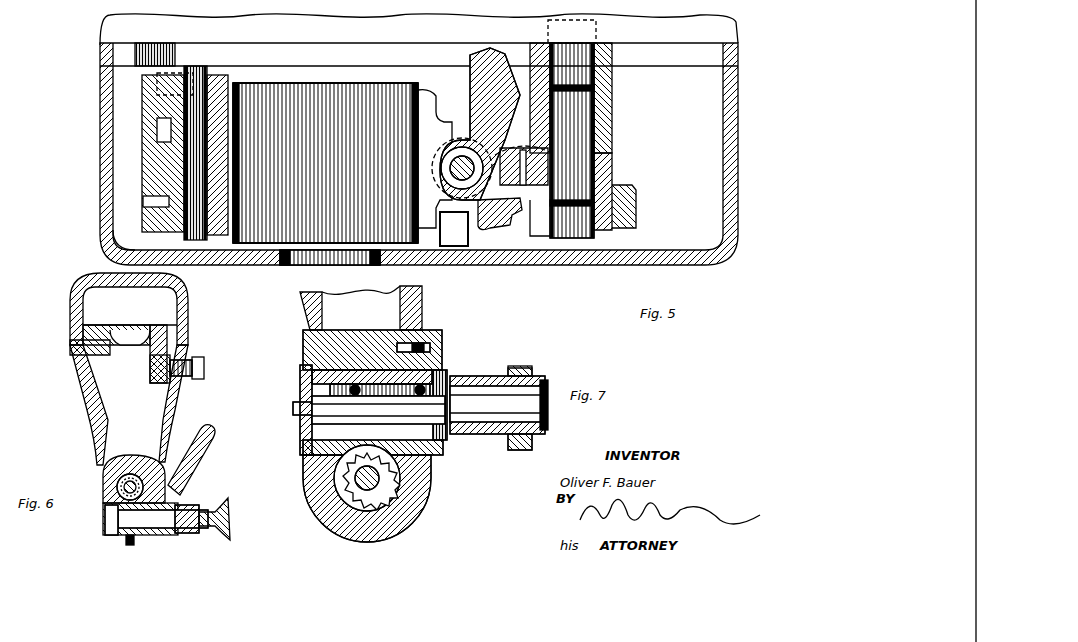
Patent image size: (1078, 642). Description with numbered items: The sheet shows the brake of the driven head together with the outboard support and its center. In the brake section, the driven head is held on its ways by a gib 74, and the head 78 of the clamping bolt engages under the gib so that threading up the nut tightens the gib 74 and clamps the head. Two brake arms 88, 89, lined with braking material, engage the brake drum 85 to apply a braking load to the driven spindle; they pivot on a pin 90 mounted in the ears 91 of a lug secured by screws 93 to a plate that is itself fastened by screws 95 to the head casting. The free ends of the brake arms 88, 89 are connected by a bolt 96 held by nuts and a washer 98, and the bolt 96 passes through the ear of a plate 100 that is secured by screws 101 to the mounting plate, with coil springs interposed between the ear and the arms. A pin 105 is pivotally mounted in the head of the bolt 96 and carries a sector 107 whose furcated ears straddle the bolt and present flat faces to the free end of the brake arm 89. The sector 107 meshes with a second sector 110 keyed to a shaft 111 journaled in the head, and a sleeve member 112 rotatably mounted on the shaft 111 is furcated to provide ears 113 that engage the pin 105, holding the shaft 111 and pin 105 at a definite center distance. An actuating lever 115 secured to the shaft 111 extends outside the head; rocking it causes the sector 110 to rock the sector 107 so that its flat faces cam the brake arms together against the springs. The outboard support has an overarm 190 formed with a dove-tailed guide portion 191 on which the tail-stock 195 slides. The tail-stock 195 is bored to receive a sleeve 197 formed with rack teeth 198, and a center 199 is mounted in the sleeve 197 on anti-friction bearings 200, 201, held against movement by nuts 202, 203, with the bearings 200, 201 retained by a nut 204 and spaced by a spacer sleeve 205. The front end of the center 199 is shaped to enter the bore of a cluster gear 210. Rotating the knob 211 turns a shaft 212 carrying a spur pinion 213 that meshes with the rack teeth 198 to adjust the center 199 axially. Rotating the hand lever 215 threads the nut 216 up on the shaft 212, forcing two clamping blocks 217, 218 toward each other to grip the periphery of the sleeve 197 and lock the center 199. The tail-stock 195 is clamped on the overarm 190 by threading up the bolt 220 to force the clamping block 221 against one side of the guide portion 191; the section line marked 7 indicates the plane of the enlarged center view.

In FIG. 5, the gib 74 is at (222, 18).
In FIG. 5, the head of the bolt 78 is at (742, 5).
In FIG. 5, the brake drum 85 is at (382, 95).
In FIG. 5, the brake arm 88 is at (165, 128).
In FIG. 5, the brake arm 89 is at (160, 190).
In FIG. 5, the pin 90 is at (195, 240).
In FIG. 5, the ears 91 is at (125, 238).
In FIG. 5, the screws 93 is at (165, 45).
In FIG. 5, the screws 95 is at (373, 55).
In FIG. 5, the bolt 96 is at (482, 150).
In FIG. 5, the washer 98 is at (435, 159).
In FIG. 5, the plate 100 is at (472, 100).
In FIG. 5, the screws 101 is at (545, 50).
In FIG. 5, the pin 105 is at (468, 240).
In FIG. 5, the sector 107 is at (500, 214).
In FIG. 5, the sector 110 is at (612, 190).
In FIG. 5, the shaft 111 is at (595, 37).
In FIG. 5, the sleeve member 112 is at (612, 135).
In FIG. 5, the ears 113 is at (528, 110).
In FIG. 5, the actuating lever 115 is at (548, 238).
In FIG. 6, the overarm 190 is at (190, 300).
In FIG. 6, the dove-tailed guide portion 191 is at (96, 352).
In FIG. 6, the tail-stock 195 is at (188, 415).
In FIG. 7, the tail-stock 195 is at (310, 323).
In FIG. 7, the sleeve 197 is at (303, 450).
In FIG. 7, the rack teeth 198 is at (400, 488).
In FIG. 7, the center 199 is at (462, 372).
In FIG. 7, the anti-friction bearing 200 is at (378, 384).
In FIG. 7, the anti-friction bearing 201 is at (365, 372).
In FIG. 7, the nut 202 is at (440, 370).
In FIG. 7, the nut 203 is at (330, 352).
In FIG. 7, the nut 204 is at (300, 430).
In FIG. 7, the spacer sleeve 205 is at (375, 343).
In FIG. 7, the cluster gear 210 is at (520, 450).
In FIG. 6, the knob 211 is at (240, 498).
In FIG. 6, the shaft 212 is at (118, 516).
In FIG. 7, the shaft 212 is at (352, 488).
In FIG. 6, the spur pinion 213 is at (126, 540).
In FIG. 7, the spur pinion 213 is at (360, 505).
In FIG. 6, the hand lever 215 is at (205, 450).
In FIG. 6, the nut 216 is at (188, 535).
In FIG. 6, the clamping block 217 is at (170, 470).
In FIG. 6, the clamping block 218 is at (105, 530).
In FIG. 6, the bolt 220 is at (205, 360).
In FIG. 6, the clamping block 221 is at (180, 352).
In FIG. 6, the section line 7- 7 is at (131, 470).